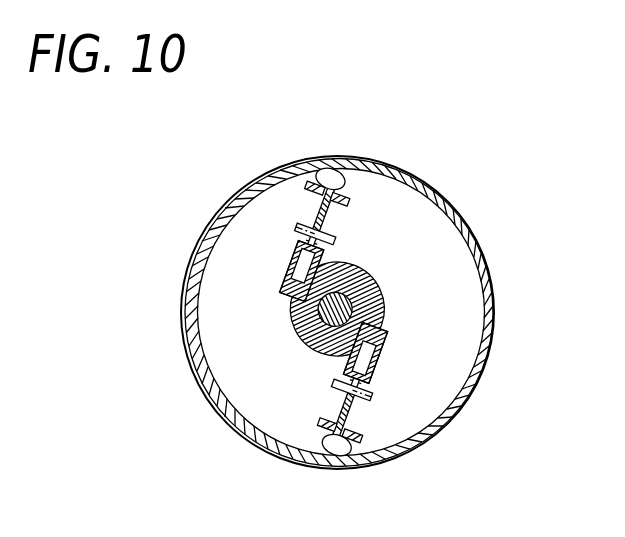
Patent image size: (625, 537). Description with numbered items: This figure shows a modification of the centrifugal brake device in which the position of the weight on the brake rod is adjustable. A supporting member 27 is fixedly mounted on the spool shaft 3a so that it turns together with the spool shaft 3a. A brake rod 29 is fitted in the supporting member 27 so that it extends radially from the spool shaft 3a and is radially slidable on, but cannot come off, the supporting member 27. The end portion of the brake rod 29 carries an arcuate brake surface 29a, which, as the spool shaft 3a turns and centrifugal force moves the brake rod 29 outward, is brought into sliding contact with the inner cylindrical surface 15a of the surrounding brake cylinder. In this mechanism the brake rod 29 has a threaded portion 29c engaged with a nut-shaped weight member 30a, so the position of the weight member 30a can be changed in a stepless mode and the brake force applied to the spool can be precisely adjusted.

The inner cylindrical surface 15a is at (472, 361).
The nut-shaped weight member 30a is at (365, 165).
The supporting member 27 is at (370, 287).
The spool shaft 3a is at (318, 312).
The brake rod 29 is at (310, 202).
The threaded portion 29c is at (338, 235).
The brake surface 29a is at (328, 172).